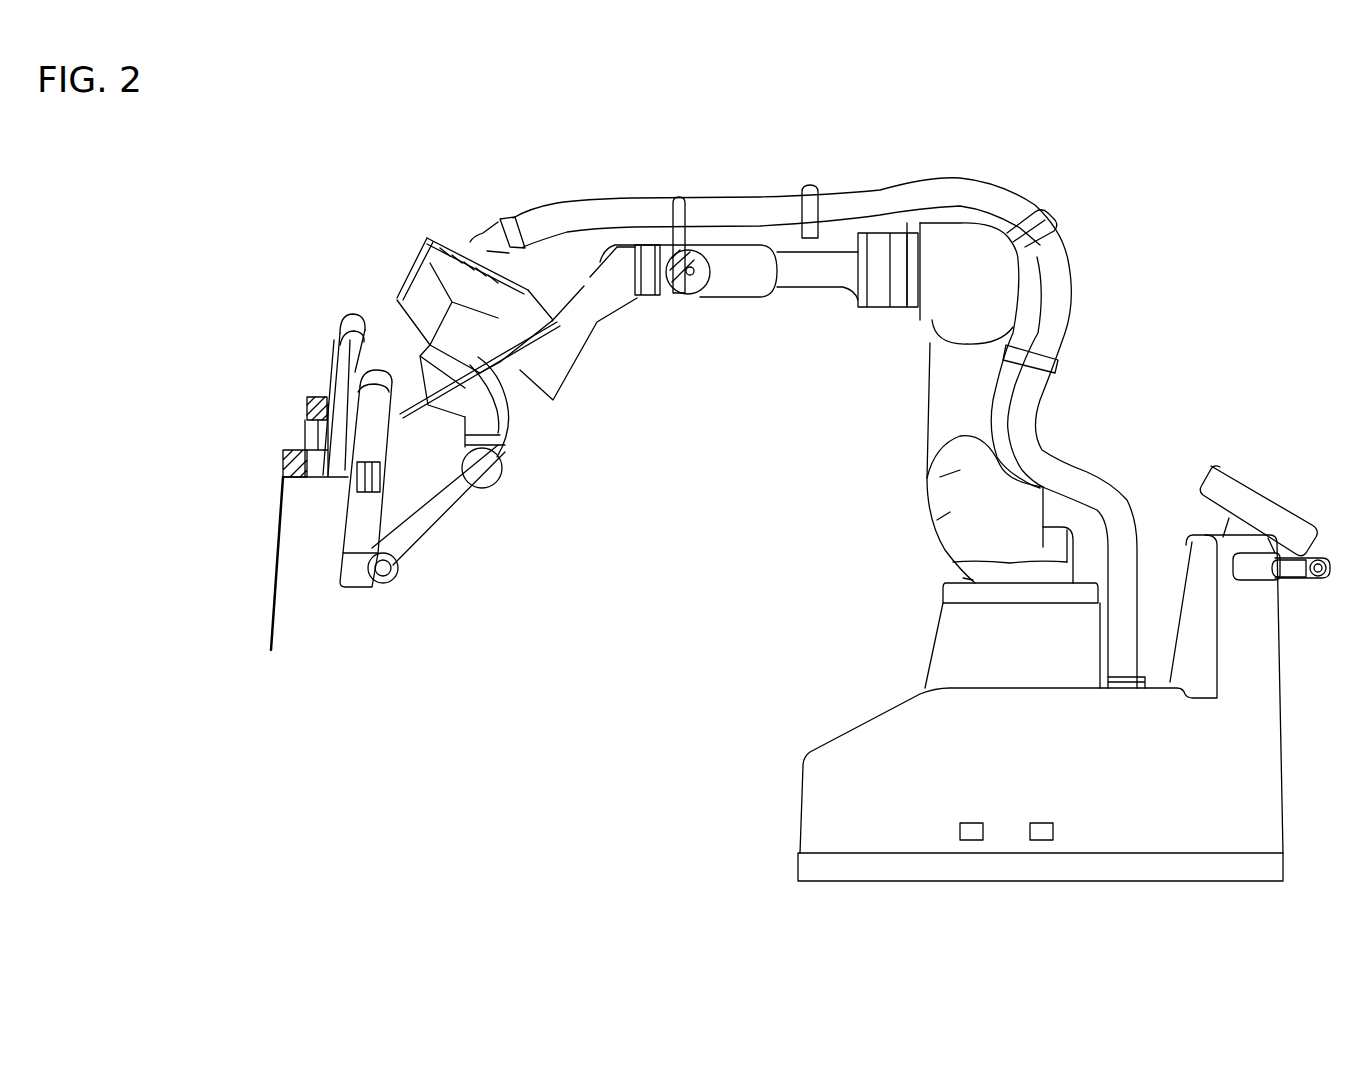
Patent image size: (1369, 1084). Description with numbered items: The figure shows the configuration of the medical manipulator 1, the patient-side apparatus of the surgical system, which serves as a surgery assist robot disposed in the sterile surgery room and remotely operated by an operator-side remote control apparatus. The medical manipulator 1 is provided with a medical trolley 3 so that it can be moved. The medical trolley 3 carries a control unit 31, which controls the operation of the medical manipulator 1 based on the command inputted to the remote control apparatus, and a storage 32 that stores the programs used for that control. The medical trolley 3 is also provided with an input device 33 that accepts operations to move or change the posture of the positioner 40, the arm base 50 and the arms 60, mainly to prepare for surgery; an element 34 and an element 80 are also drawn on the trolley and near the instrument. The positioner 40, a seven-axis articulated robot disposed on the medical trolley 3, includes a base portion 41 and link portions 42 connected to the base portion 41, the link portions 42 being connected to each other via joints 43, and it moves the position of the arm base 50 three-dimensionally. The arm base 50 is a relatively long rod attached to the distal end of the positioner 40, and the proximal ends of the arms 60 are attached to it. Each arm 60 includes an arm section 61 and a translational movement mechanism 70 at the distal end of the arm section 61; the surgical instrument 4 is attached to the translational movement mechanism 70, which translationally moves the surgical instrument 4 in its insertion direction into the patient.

The medical manipulator 1 is at (1122, 210).
The medical trolley 3 is at (1298, 727).
The surgical instrument 4 is at (265, 515).
The control unit 31 is at (971, 840).
The storage 32 is at (1040, 840).
The input device 33 is at (1258, 488).
The emergency stop switch 34 is at (1322, 556).
The positioner 40 is at (760, 172).
The base portion 41 is at (950, 632).
The link portions 42 is at (596, 318).
The joints 43 is at (545, 392).
The arm base 50 is at (400, 240).
The arm 60 is at (452, 550).
The arm section 61 is at (446, 508).
The translational movement mechanism 70 is at (325, 335).
The wire clamp 80 is at (300, 406).